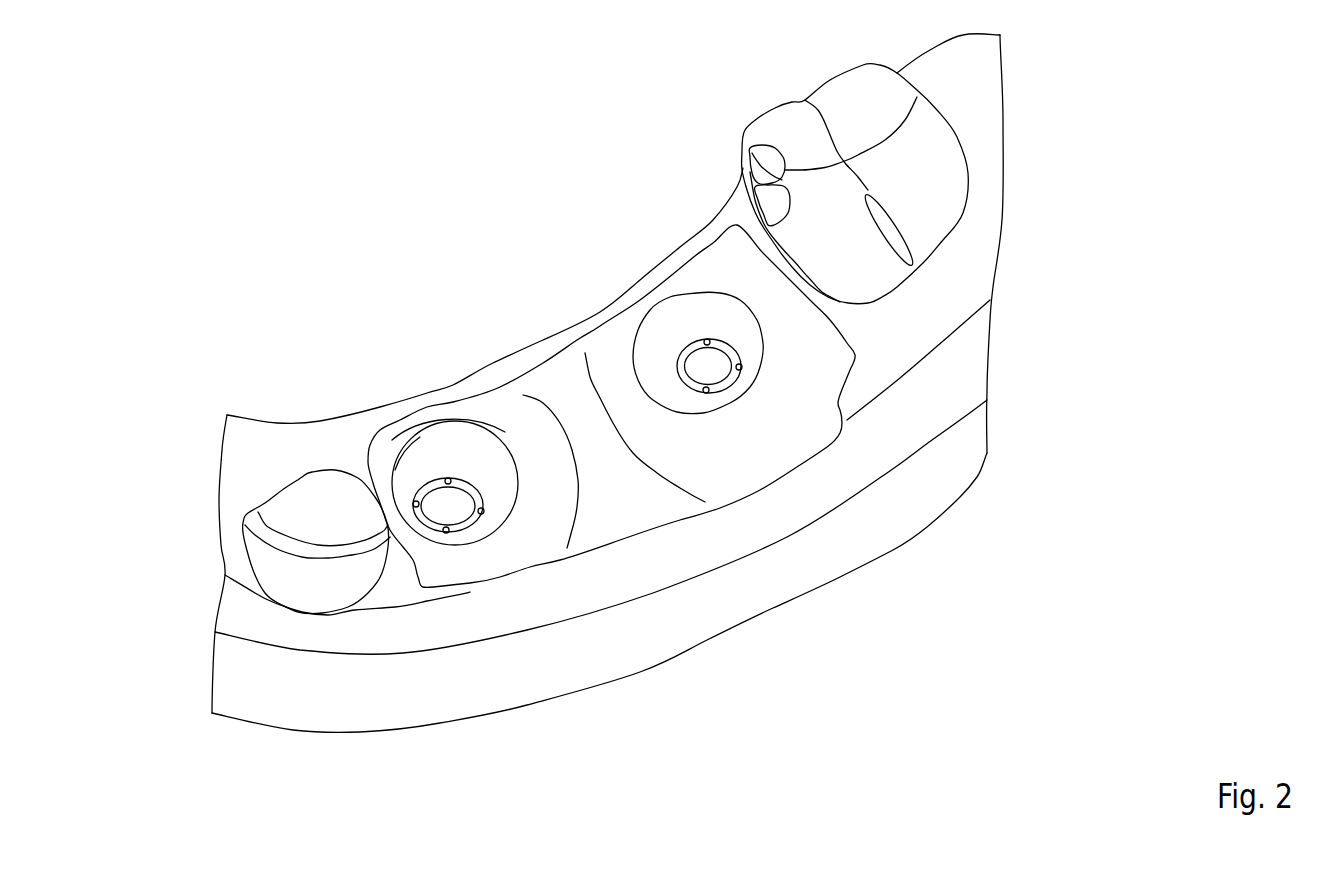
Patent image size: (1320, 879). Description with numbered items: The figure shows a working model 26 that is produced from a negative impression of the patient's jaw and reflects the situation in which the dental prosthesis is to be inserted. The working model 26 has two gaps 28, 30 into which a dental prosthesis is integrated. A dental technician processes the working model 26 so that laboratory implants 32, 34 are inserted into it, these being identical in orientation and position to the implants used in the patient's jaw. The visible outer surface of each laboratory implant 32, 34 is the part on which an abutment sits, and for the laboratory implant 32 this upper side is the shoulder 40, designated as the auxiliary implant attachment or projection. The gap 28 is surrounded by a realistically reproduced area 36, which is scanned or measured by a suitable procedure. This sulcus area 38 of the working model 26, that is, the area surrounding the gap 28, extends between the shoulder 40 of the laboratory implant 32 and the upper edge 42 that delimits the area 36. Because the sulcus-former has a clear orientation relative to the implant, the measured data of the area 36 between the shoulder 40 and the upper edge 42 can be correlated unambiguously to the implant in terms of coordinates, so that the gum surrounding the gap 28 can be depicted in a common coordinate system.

The working model 26 is at (182, 683).
The gap 28 is at (466, 305).
The gap 30 is at (653, 209).
The laboratory implant 32 is at (448, 478).
The laboratory implant 34 is at (682, 348).
The area surrounding the gap 36 is at (427, 440).
The sulcus area 38 is at (417, 462).
The shoulder 40 is at (446, 482).
The upper edge 42 is at (450, 421).